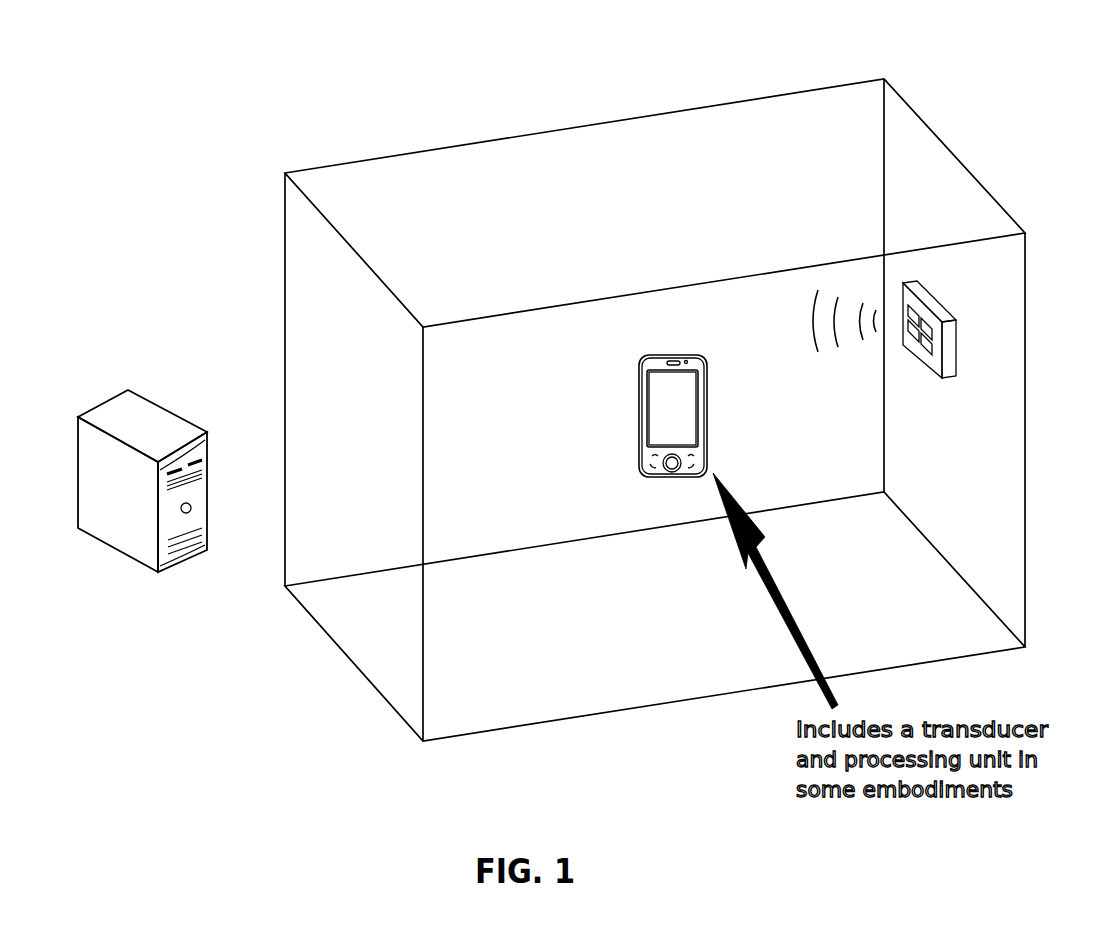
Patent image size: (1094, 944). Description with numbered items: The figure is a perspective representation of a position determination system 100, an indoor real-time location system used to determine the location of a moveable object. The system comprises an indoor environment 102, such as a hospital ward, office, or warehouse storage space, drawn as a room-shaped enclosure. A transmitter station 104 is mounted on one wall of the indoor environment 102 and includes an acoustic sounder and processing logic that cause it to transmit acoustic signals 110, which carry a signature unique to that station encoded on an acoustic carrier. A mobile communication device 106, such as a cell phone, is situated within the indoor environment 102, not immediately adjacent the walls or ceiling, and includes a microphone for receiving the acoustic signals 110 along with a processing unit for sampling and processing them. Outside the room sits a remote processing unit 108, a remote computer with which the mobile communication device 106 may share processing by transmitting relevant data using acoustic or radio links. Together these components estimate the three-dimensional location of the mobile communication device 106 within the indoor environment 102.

The position determination system 100 is at (1034, 88).
The indoor environment 102 is at (480, 142).
The transmitter station 104 is at (951, 362).
The mobile communication device 106 is at (640, 402).
The remote processing unit 108 is at (156, 400).
The acoustic signals 110 is at (838, 354).